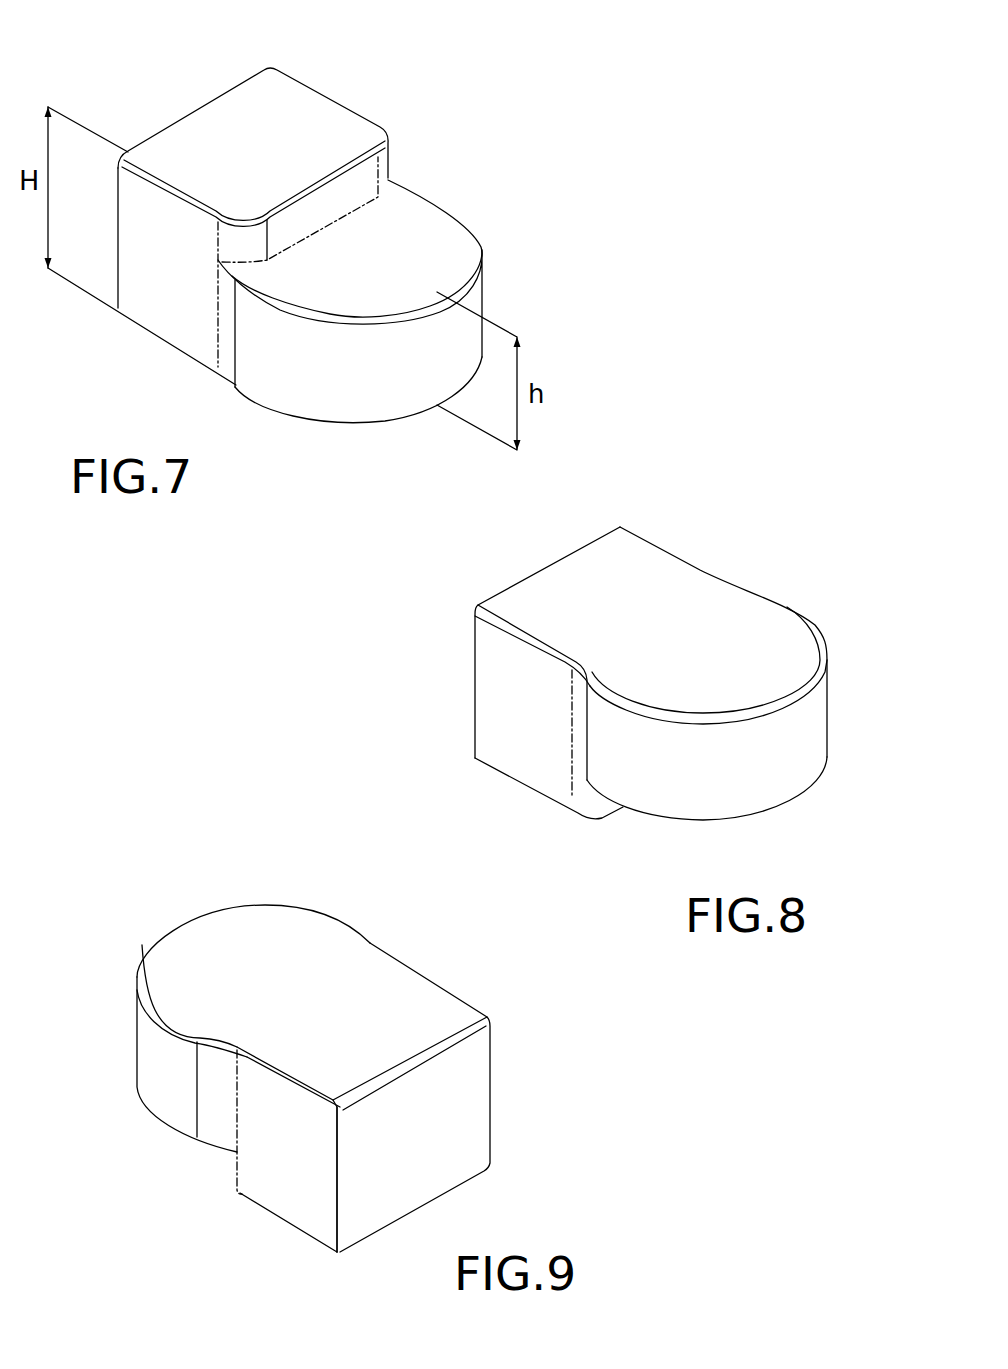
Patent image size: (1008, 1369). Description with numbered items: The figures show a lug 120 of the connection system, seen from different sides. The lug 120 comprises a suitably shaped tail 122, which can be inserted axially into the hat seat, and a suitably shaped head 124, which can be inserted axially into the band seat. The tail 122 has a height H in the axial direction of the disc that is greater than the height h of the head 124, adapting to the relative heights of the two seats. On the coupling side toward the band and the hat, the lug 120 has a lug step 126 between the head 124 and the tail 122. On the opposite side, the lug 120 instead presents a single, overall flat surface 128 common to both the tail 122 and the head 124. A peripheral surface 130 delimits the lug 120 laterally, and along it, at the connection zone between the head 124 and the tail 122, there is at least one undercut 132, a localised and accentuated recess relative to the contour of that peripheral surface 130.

In FIG. 7, the lug 120 is at (363, 263).
In FIG. 8, the lug 120 is at (576, 674).
In FIG. 9, the lug 120 is at (261, 1060).
In FIG. 7, the tail 122 is at (316, 263).
In FIG. 8, the tail 122 is at (562, 648).
In FIG. 9, the tail 122 is at (261, 1135).
In FIG. 7, the head 124 is at (484, 225).
In FIG. 8, the head 124 is at (703, 704).
In FIG. 9, the head 124 is at (186, 912).
In FIG. 7, the lug step 126 is at (398, 166).
In FIG. 8, the flat surface 128 is at (702, 625).
In FIG. 7, the peripheral surface 130 is at (326, 382).
In FIG. 8, the peripheral surface 130 is at (510, 705).
In FIG. 9, the peripheral surface 130 is at (222, 1183).
In FIG. 7, the undercut 132 is at (228, 318).
In FIG. 8, the undercut 132 is at (580, 744).
In FIG. 9, the undercut 132 is at (222, 1082).